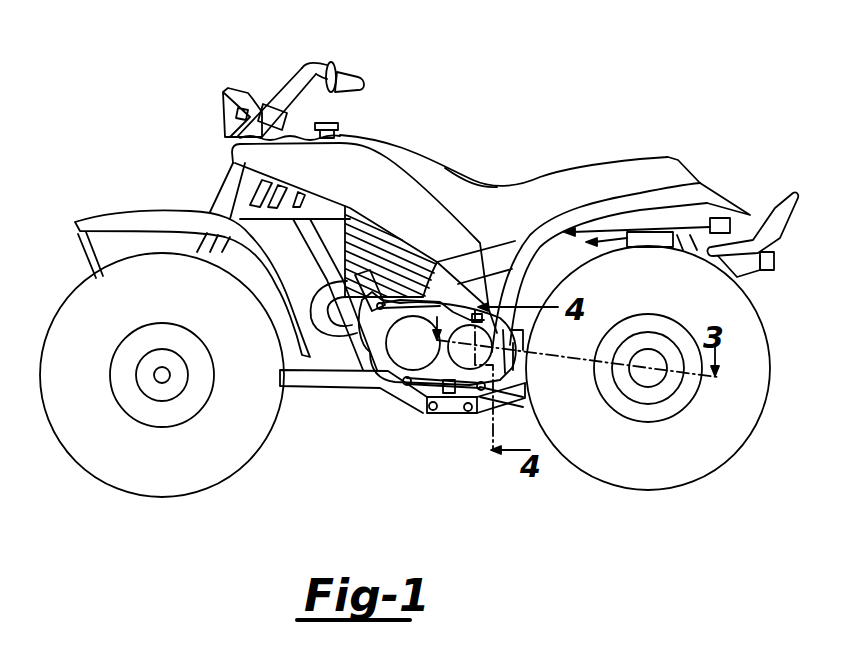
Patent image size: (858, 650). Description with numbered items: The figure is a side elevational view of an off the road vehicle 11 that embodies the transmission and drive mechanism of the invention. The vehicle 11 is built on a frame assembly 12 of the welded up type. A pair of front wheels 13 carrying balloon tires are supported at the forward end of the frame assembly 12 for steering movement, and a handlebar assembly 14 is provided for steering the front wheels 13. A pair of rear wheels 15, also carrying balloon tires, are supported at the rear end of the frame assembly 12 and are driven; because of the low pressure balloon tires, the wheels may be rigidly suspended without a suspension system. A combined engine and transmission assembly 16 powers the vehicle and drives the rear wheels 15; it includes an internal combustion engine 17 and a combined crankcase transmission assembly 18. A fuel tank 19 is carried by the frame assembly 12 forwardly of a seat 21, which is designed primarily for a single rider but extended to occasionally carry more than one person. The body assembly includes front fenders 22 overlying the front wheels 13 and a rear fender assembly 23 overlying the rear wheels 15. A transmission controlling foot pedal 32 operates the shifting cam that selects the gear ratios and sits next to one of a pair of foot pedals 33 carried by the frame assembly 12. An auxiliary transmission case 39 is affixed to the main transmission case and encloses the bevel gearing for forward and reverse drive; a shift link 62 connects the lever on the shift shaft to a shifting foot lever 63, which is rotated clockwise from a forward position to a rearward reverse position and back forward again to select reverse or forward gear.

The off the road vehicle 11 is at (643, 145).
The frame assembly 12 is at (330, 384).
The front wheels 13 is at (56, 437).
The handlebar assembly 14 is at (323, 66).
The rear wheels 15 is at (770, 347).
The combined engine and transmission assembly 16 is at (343, 258).
The internal combustion engine 17 is at (345, 210).
The combined crankcase transmission assembly 18 is at (368, 393).
The fuel tank 19 is at (373, 136).
The seat 21 is at (530, 183).
The front fenders 22 is at (143, 220).
The rear fender assembly 23 is at (703, 184).
The transmission controlling foot pedal 32 is at (420, 388).
The foot pedals 33 is at (444, 406).
The auxiliary transmission case 39 is at (470, 250).
The shift link 62 is at (437, 260).
The shifting foot lever 63 is at (383, 265).